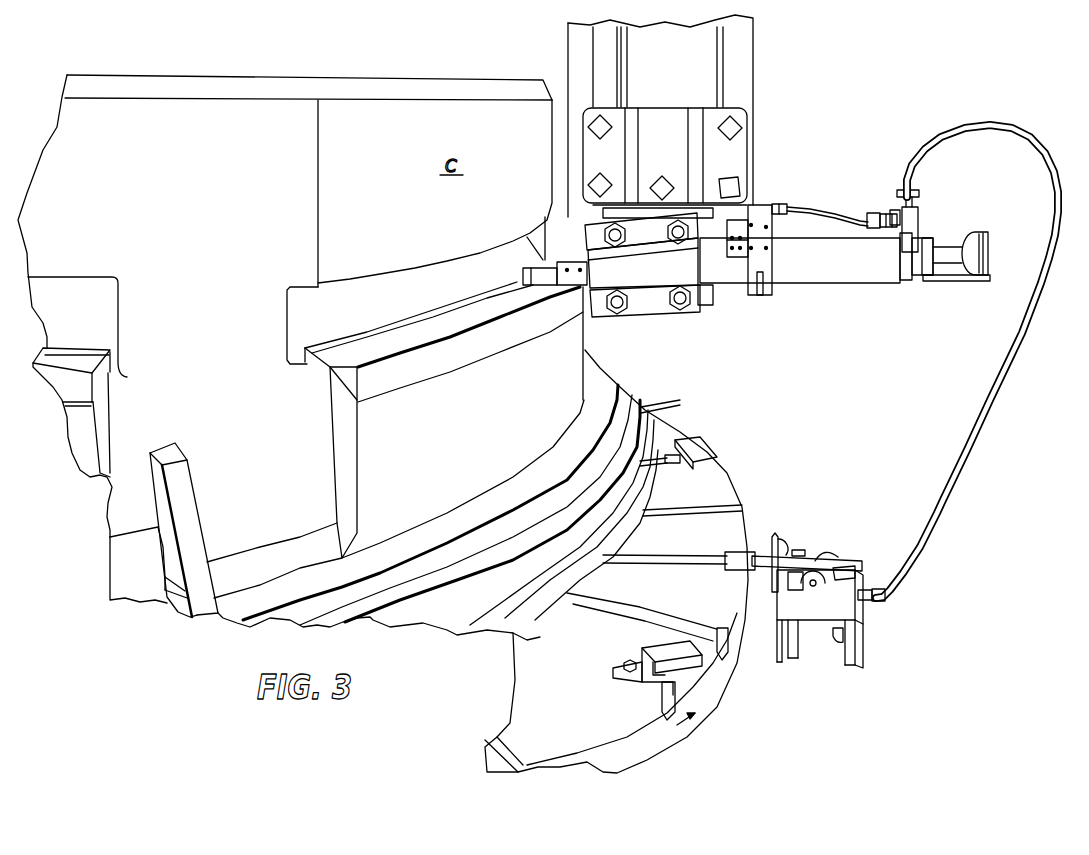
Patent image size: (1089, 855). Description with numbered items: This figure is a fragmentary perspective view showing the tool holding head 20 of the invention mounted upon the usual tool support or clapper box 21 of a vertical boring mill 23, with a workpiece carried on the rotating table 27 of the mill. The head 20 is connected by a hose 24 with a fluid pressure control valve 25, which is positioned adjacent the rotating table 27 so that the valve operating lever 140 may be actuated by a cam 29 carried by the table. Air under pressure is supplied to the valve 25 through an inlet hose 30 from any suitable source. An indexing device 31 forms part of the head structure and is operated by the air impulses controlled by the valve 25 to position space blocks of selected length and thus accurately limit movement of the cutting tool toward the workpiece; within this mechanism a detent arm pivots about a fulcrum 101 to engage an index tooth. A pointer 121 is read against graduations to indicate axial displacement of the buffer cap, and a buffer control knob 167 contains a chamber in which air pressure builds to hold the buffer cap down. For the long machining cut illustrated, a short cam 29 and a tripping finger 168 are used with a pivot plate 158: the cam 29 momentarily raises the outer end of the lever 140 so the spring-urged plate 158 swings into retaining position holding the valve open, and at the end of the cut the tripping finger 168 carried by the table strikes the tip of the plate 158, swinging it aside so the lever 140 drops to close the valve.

The head 20 is at (742, 253).
The clapper box 21 is at (694, 156).
The vertical boring mill 23 is at (684, 76).
The hose 24 is at (967, 344).
The fluid pressure control valve 25 is at (858, 625).
The rotating table 27 is at (633, 561).
The cam 29 is at (698, 453).
The inlet hose 30 is at (823, 647).
The indexing device 31 is at (766, 221).
The pivot of detent arm 101 is at (836, 206).
The pointer 121 is at (956, 296).
The valve operating lever 140 is at (823, 565).
The pivot plate 158 is at (722, 542).
The buffer control knob 167 is at (969, 240).
The tripping finger 168 is at (657, 669).